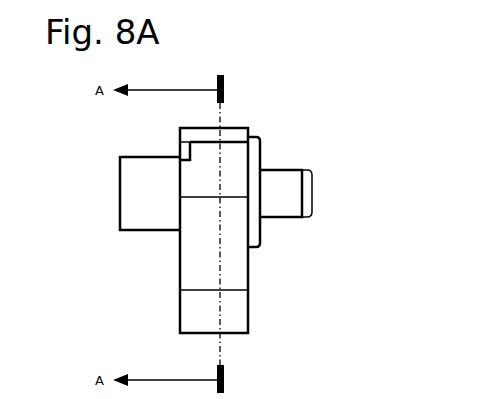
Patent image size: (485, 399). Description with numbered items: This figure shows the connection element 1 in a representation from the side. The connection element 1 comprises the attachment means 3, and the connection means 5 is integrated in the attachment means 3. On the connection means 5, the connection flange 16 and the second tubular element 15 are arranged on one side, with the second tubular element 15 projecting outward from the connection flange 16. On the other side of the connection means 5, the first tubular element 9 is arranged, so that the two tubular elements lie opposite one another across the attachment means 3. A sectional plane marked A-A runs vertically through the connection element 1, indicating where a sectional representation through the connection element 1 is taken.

The connection element 1 is at (196, 190).
The attachment means 3 is at (230, 318).
The connection means 5 is at (187, 135).
The first tubular element 9 is at (132, 190).
The second tubular element 15 is at (285, 188).
The connection flange 16 is at (253, 233).